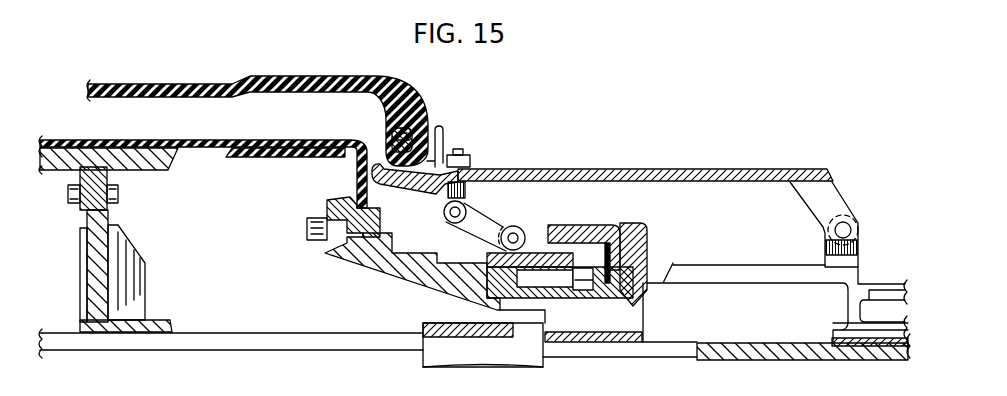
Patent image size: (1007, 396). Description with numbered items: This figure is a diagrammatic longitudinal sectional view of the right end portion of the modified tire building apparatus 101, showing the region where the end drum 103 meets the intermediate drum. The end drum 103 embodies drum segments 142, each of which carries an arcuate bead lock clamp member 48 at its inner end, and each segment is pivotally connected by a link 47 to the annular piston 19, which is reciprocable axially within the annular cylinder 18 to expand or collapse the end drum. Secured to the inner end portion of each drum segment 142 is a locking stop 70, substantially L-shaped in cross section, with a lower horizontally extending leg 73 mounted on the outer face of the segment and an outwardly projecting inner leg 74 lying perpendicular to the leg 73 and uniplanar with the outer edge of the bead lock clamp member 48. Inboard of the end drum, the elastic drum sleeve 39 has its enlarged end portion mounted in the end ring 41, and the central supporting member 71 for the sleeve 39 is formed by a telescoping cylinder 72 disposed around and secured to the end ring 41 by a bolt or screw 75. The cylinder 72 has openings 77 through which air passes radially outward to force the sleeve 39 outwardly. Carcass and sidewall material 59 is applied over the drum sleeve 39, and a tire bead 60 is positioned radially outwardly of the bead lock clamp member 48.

The annular cylinder 18 is at (648, 250).
The annular piston 19 is at (615, 233).
The elastic drum sleeve 39 is at (215, 140).
The end ring 41 is at (327, 193).
The link 47 is at (492, 217).
The arcuate bead lock clamp member 48 is at (410, 194).
The carcass and sidewall material 59 is at (412, 100).
The tire bead 60 is at (400, 147).
The locking stop 70 is at (495, 170).
The central supporting member 71 is at (253, 158).
The telescoping cylinder 72 is at (297, 148).
The lower leg 73 is at (470, 157).
The inner leg 74 is at (446, 130).
The bolt or screw 75 is at (330, 158).
The opening 77 is at (243, 160).
The tire building apparatus 101 is at (838, 156).
The end drum 103 is at (742, 169).
The drum segment 142 is at (641, 169).